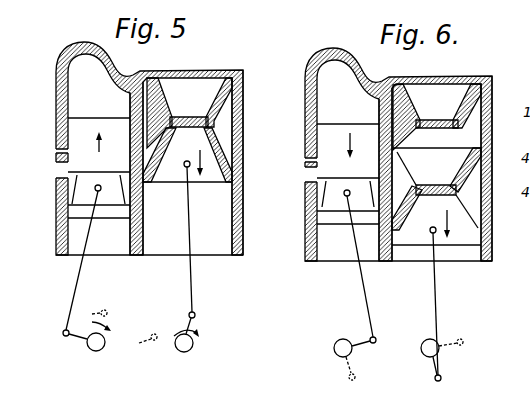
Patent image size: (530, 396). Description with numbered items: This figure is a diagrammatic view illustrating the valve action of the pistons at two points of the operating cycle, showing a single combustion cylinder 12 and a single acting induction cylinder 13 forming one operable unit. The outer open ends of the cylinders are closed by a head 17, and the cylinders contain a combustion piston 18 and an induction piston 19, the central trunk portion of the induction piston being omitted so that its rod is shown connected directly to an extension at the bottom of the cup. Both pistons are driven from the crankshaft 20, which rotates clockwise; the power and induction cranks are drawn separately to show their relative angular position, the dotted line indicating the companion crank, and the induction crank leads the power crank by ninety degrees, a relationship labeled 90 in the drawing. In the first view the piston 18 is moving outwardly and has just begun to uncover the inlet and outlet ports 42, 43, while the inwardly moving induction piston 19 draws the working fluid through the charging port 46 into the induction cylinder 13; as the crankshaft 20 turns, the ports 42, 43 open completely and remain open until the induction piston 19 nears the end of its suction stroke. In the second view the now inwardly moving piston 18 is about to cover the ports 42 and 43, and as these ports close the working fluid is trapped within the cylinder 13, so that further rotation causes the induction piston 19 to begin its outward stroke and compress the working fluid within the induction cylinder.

In FIG. 5, the combustion cylinder 12 is at (56, 104).
In FIG. 5, the induction cylinder 13 is at (244, 113).
In FIG. 6, the induction cylinder 13 is at (492, 133).
In FIG. 6, the head 17 is at (308, 62).
In FIG. 5, the combustion piston 18 is at (113, 210).
In FIG. 6, the combustion piston 18 is at (337, 222).
In FIG. 5, the induction piston 19 is at (213, 139).
In FIG. 6, the induction piston 19 is at (459, 202).
In FIG. 5, the crankshaft 20 is at (105, 342).
In FIG. 5, the inlet port 42 is at (61, 172).
In FIG. 6, the inlet port 42 is at (310, 180).
In FIG. 5, the outlet port 43 is at (132, 163).
In FIG. 6, the outlet port 43 is at (383, 169).
In FIG. 5, the charging port 46 is at (148, 163).
In FIG. 6, the charging port 46 is at (391, 167).
In FIG. 5, the direction of rotation 90 is at (93, 322).